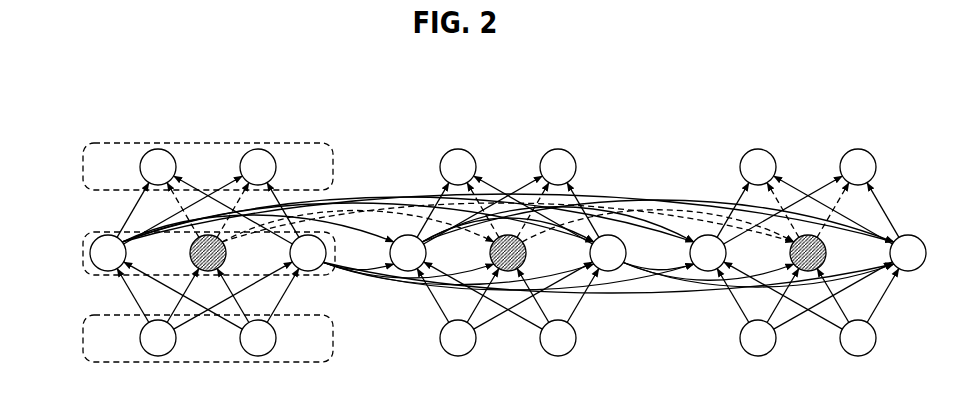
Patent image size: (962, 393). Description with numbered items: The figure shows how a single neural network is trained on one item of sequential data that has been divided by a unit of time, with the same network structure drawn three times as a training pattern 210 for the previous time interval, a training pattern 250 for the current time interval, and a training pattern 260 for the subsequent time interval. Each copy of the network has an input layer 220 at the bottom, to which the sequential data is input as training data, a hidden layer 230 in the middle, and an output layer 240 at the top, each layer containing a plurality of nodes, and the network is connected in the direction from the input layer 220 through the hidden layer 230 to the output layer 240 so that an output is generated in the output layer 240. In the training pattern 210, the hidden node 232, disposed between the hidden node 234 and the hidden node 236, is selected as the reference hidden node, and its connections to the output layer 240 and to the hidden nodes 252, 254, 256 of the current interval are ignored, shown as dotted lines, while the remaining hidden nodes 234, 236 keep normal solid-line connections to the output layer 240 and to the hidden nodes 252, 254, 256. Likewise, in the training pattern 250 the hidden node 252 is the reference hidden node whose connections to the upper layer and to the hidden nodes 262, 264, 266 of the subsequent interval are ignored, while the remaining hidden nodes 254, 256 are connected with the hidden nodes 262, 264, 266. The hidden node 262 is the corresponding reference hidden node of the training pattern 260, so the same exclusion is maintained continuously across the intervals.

The training pattern 210 is at (224, 116).
The training pattern 250 is at (524, 116).
The training pattern 260 is at (822, 116).
The output layer 240 is at (83, 166).
The hidden layer 230 is at (83, 252).
The input layer 220 is at (83, 338).
The hidden node 232 is at (190, 252).
The hidden node 234 is at (118, 235).
The hidden node 236 is at (290, 252).
The hidden node 252 is at (488, 252).
The hidden node 254 is at (388, 252).
The hidden node 256 is at (588, 252).
The hidden node 262 is at (788, 252).
The hidden node 264 is at (688, 252).
The hidden node 266 is at (888, 252).